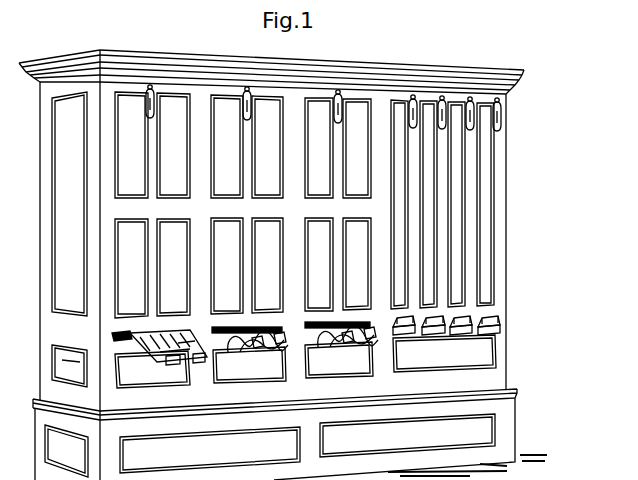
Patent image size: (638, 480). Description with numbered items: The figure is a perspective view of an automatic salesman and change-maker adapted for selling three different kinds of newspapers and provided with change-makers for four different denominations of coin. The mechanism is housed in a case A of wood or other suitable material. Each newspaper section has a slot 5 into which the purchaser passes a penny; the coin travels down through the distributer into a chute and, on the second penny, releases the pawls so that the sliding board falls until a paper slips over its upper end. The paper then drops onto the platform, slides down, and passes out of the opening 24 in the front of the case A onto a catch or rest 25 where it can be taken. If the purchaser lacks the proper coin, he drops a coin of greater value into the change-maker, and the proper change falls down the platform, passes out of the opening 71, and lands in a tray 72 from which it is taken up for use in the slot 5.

The case A is at (526, 212).
The slot 5 is at (146, 104).
The opening 24 is at (113, 335).
The catch or rest 25 is at (161, 365).
The opening 71 is at (492, 318).
The tray 72 is at (500, 331).